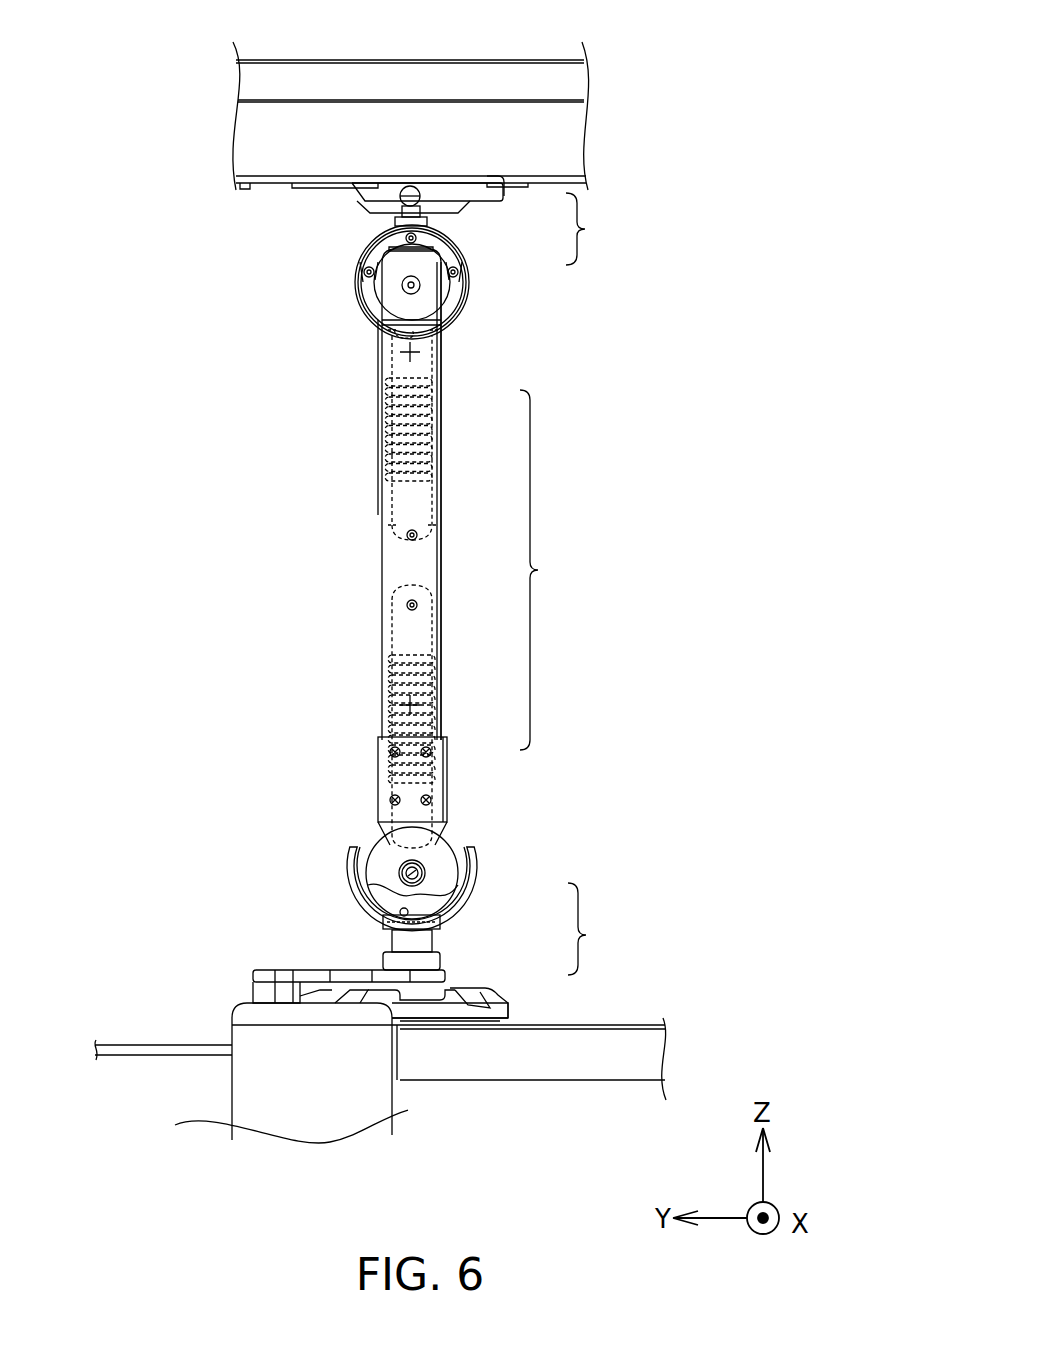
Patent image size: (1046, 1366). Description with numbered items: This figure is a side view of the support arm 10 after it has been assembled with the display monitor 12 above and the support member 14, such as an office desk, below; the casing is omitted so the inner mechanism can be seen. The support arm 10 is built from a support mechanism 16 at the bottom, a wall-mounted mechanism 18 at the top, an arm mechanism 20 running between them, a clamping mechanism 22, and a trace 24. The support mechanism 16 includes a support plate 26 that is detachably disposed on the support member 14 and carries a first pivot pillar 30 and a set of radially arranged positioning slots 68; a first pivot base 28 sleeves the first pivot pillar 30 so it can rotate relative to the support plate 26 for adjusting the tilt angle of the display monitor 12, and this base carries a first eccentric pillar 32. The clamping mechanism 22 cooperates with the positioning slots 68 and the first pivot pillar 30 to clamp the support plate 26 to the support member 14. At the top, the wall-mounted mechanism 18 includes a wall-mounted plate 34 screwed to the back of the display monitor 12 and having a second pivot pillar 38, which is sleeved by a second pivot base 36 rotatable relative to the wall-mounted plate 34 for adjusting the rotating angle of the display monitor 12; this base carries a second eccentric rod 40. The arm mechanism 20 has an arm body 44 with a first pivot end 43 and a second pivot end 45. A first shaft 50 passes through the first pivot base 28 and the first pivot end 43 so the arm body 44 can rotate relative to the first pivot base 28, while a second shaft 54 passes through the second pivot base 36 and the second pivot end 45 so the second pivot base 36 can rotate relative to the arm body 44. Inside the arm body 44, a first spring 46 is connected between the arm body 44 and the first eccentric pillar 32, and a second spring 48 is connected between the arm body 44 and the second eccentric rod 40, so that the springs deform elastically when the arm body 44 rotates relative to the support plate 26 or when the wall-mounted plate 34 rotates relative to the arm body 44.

The support arm 10 is at (325, 521).
The display monitor 12 is at (552, 132).
The support member 14 is at (592, 1075).
The support mechanism 16 is at (596, 929).
The wall-mounted mechanism 18 is at (593, 229).
The arm mechanism 20 is at (551, 570).
The clamping mechanism 22 is at (278, 975).
The trace 24 is at (420, 195).
The support plate 26 is at (490, 1000).
The first pivot base 28 is at (466, 896).
The first pivot pillar 30 is at (400, 946).
The first eccentric pillar 32 is at (405, 835).
The wall-mounted plate 34 is at (452, 205).
The second pivot base 36 is at (445, 250).
The second pivot pillar 38 is at (396, 222).
The second eccentric rod 40 is at (398, 336).
The first pivot end 43 is at (376, 858).
The arm body 44 is at (418, 568).
The second pivot end 45 is at (396, 281).
The first spring 46 is at (434, 680).
The second spring 48 is at (432, 450).
The first shaft 50 is at (422, 866).
The second shaft 54 is at (442, 312).
The positioning slots 68 is at (466, 1005).